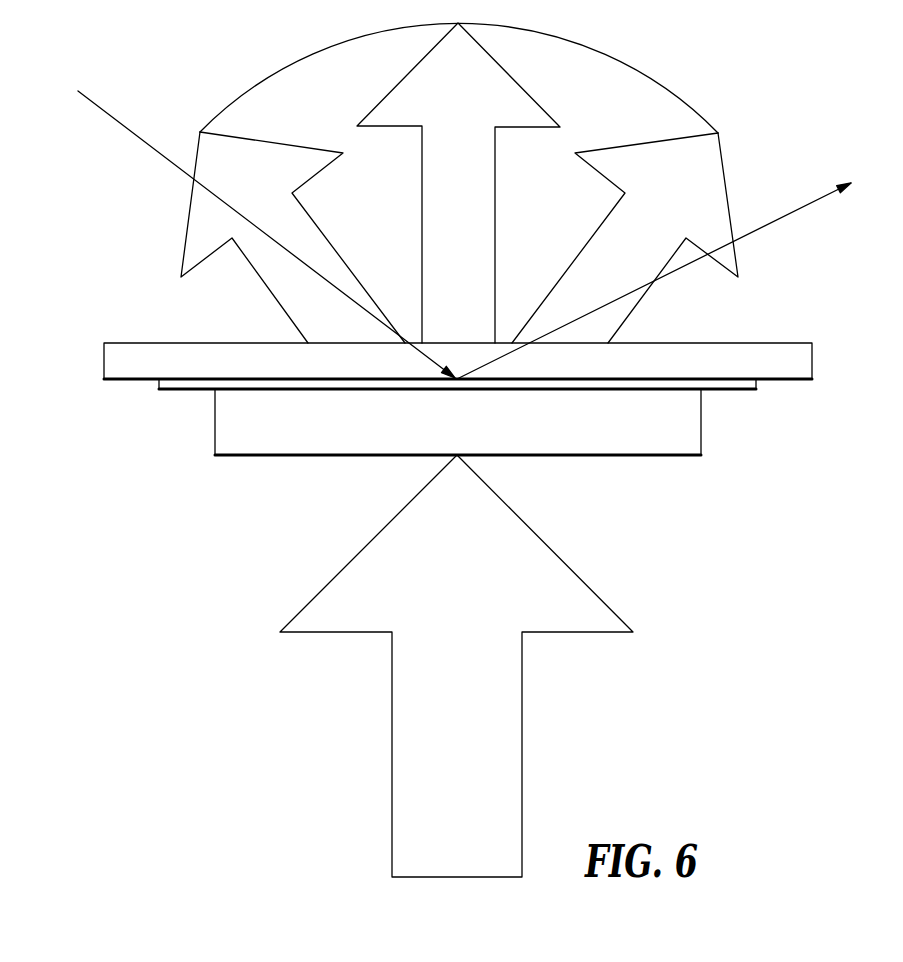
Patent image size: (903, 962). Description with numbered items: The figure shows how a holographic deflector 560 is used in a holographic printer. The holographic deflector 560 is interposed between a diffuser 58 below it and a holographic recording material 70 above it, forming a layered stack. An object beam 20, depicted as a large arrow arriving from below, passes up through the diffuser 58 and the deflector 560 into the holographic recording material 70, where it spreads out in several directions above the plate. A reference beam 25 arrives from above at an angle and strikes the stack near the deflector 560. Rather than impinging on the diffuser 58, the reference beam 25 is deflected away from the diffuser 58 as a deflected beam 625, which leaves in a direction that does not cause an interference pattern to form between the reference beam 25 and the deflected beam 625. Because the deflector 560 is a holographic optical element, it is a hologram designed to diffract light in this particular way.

The object beam 20 is at (568, 565).
The reference beam 25 is at (93, 103).
The diffuser 58 is at (702, 425).
The holographic recording material 70 is at (814, 360).
The holographic deflector 560 is at (757, 389).
The deflected beam 625 is at (671, 266).